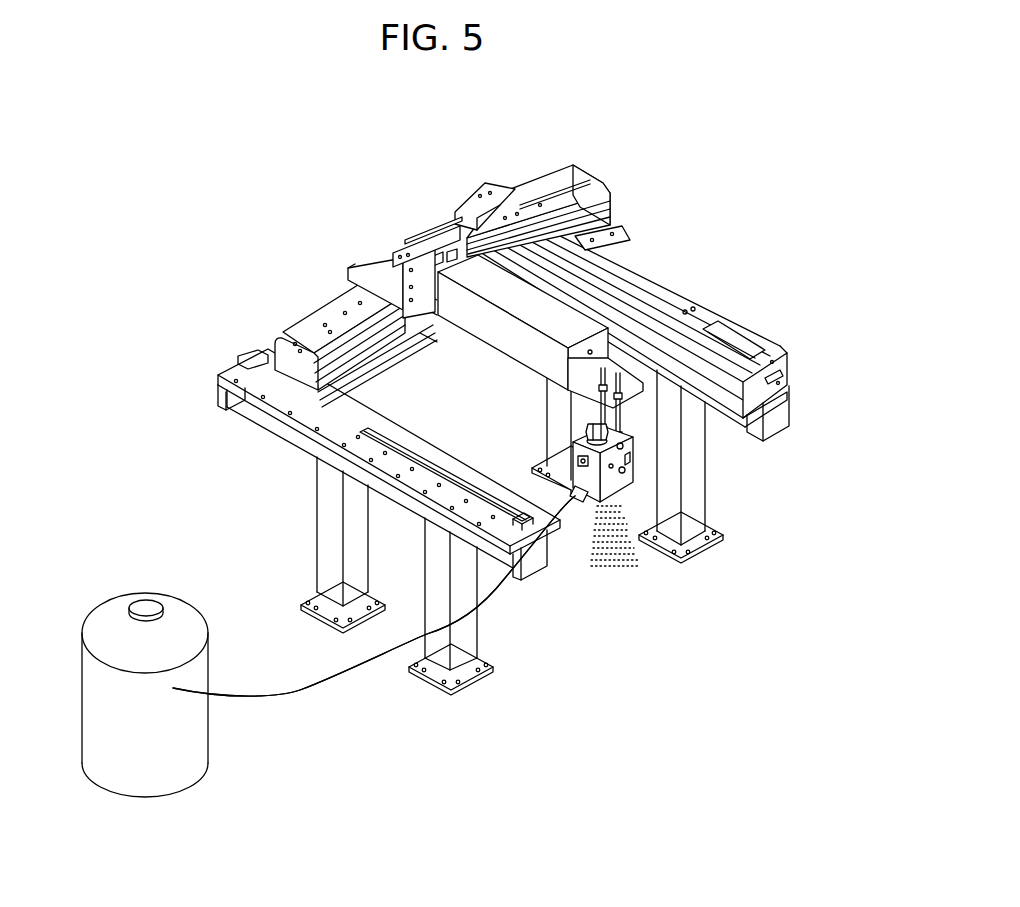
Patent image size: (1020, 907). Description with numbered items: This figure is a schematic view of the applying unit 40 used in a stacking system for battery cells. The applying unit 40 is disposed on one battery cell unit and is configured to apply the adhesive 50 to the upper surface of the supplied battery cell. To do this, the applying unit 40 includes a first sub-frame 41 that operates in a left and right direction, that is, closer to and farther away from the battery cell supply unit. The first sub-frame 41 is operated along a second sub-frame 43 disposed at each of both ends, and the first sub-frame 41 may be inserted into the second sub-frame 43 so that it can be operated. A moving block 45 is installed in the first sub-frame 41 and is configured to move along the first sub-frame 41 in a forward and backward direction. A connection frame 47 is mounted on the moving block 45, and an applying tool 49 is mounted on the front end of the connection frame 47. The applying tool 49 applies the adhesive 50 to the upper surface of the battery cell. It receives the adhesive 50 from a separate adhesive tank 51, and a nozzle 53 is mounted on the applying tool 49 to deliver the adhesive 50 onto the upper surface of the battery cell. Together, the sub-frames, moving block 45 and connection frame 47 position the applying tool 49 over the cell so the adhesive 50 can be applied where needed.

The applying unit 40 is at (521, 162).
The first sub-frame 41 is at (318, 328).
The second sub-frame 43 is at (685, 297).
The moving block 45 is at (372, 268).
The connection frame 47 is at (572, 322).
The applying tool 49 is at (630, 457).
The adhesive 50 is at (620, 557).
The adhesive tank 51 is at (160, 770).
The nozzle 53 is at (584, 503).